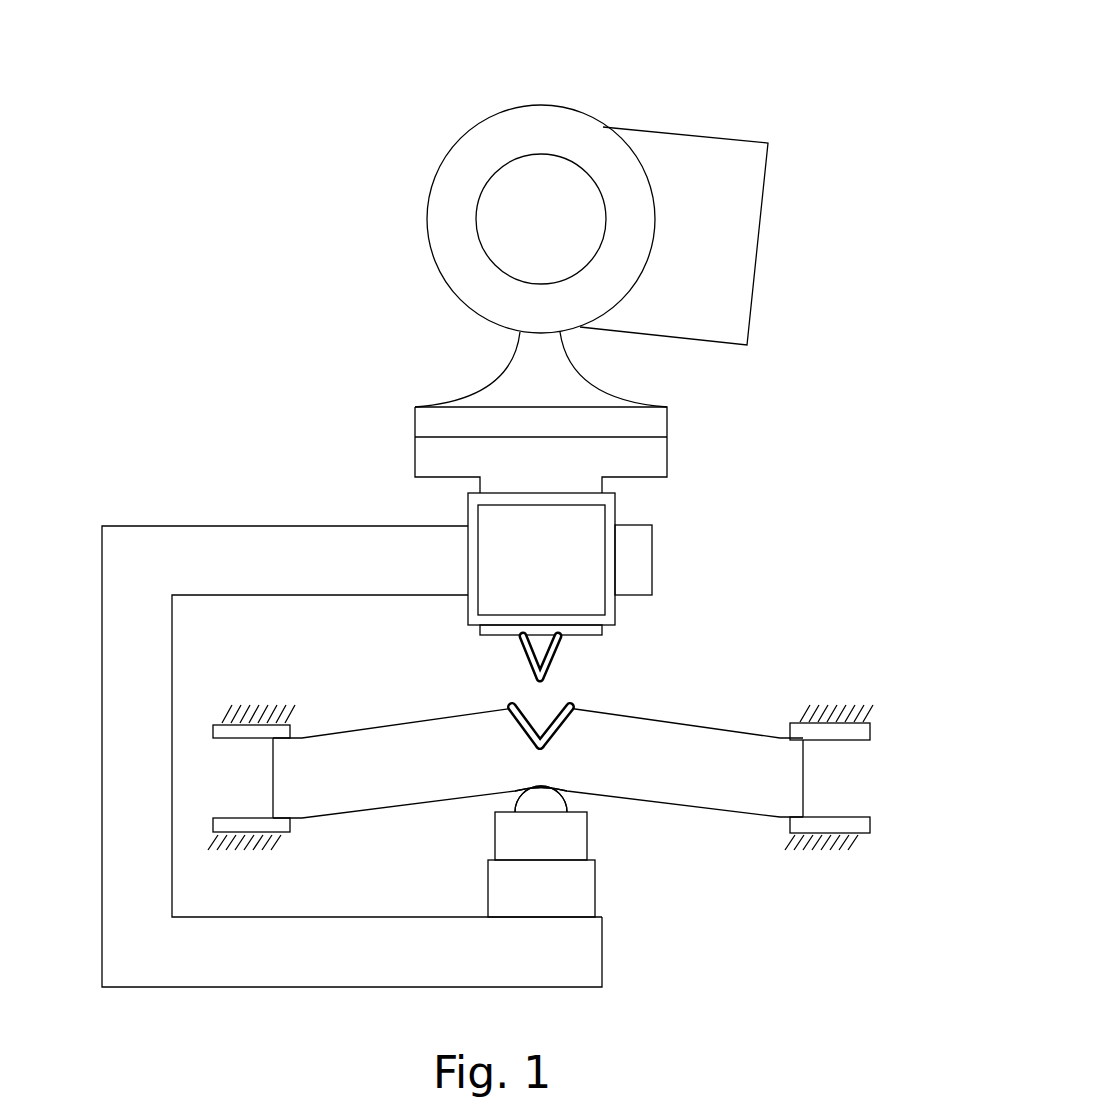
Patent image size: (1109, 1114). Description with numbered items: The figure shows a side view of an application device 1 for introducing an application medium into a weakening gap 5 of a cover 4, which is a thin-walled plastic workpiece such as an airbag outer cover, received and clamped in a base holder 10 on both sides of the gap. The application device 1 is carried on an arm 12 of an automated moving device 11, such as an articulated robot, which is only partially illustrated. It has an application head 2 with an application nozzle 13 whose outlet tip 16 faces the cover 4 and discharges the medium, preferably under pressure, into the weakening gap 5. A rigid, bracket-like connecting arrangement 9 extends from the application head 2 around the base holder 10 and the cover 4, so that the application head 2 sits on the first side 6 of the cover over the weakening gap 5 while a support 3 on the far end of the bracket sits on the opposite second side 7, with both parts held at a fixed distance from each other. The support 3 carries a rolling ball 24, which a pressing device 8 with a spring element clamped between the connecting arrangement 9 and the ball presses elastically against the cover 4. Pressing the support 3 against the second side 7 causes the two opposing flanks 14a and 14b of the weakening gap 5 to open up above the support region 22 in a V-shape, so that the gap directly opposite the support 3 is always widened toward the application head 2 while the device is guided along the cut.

The application device 1 is at (375, 283).
The application head 2 is at (583, 484).
The support 3 is at (558, 806).
The cover 4 is at (538, 766).
The weakening gap 5 is at (539, 691).
The first side 6 is at (354, 727).
The second side 7 is at (354, 815).
The pressing device 8 is at (512, 833).
The connecting arrangement 9 is at (130, 637).
The base holder 10 is at (228, 822).
The automated moving device 11 is at (674, 201).
The arm 12 is at (690, 158).
The application nozzle 13 is at (491, 652).
The flank 14a is at (522, 707).
The flank 14b is at (566, 707).
The outlet tip 16 is at (527, 660).
The support region 22 is at (512, 793).
The rolling ball 24 is at (537, 798).